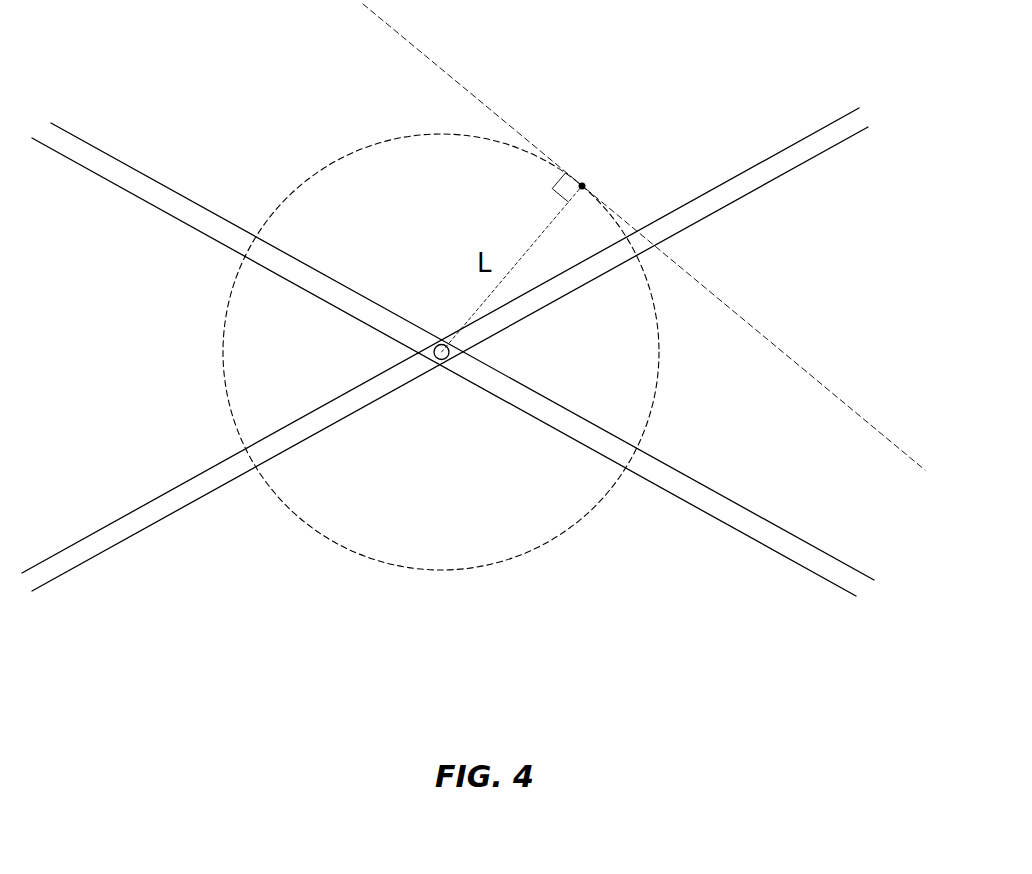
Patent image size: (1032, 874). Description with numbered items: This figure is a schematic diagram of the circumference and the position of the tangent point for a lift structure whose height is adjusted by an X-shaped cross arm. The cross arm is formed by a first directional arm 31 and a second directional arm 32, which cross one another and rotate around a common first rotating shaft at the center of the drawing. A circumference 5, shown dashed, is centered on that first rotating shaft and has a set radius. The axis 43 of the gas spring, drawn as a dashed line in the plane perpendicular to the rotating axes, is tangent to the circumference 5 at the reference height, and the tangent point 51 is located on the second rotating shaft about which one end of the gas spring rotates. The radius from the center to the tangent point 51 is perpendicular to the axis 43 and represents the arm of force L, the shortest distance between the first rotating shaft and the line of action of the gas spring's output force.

The circumference 5 is at (421, 570).
The first directional arm 31 is at (114, 545).
The second directional arm 32 is at (117, 159).
The axis of the gas spring 43 is at (783, 351).
The tangent point 51 is at (582, 186).